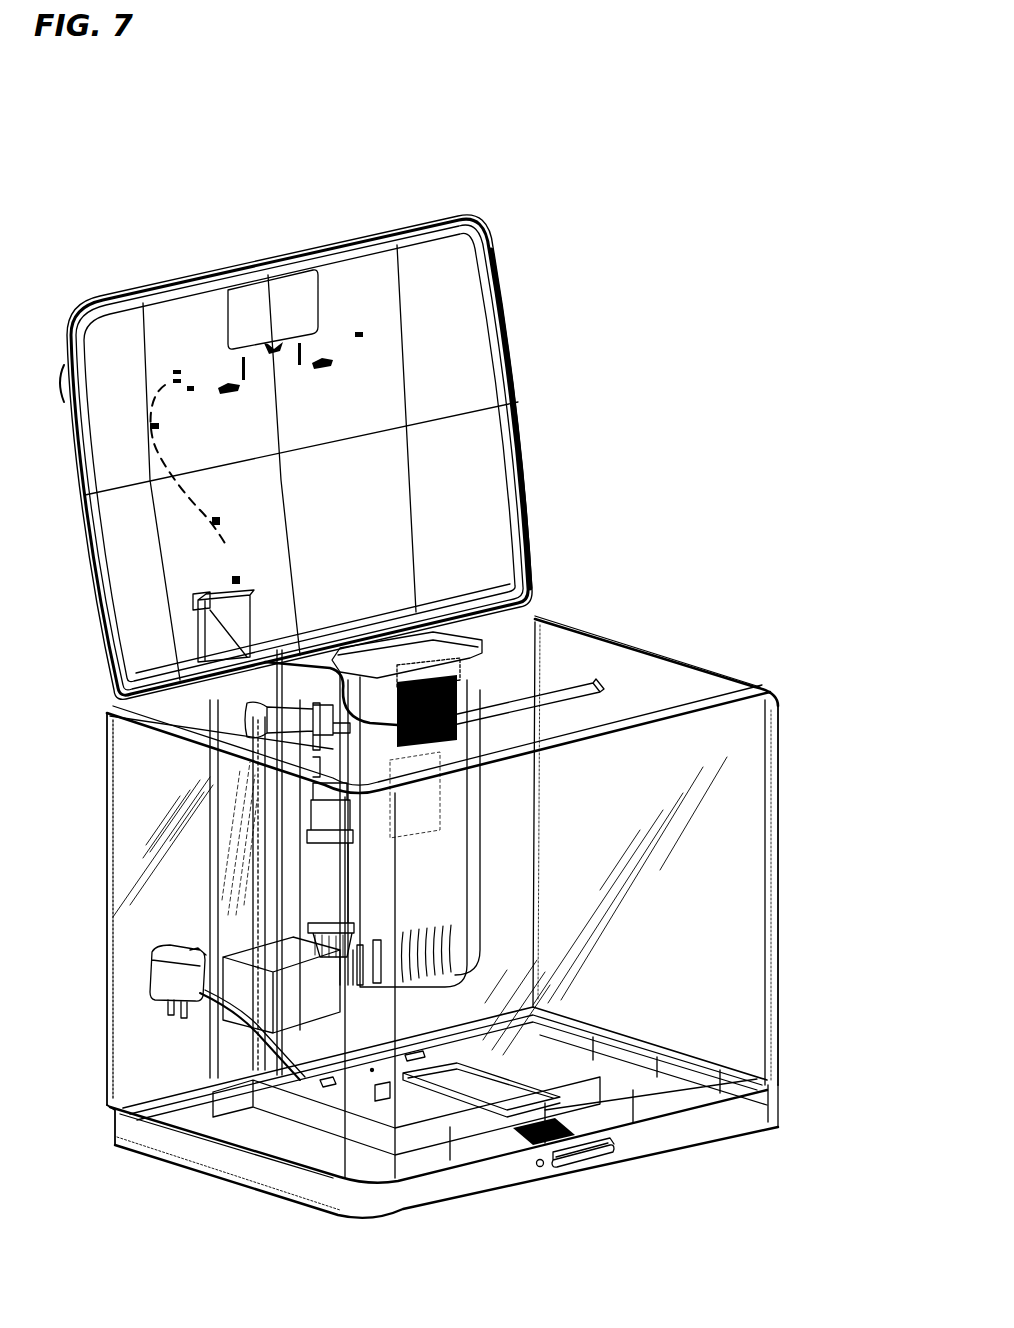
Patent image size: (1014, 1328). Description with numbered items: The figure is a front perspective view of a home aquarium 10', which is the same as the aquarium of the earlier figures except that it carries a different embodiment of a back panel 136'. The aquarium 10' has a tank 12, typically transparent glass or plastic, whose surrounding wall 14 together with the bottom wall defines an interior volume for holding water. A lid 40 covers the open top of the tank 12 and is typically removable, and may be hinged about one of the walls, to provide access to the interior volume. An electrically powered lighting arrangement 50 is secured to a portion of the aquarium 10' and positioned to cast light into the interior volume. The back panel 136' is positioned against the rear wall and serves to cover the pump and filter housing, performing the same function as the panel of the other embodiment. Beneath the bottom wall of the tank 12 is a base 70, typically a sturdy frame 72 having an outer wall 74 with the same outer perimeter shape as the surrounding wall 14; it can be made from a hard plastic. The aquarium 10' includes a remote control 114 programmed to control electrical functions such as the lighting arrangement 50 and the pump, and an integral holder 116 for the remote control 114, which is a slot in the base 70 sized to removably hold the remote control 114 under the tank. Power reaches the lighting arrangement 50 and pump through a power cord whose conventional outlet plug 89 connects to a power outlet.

The aquarium 10' is at (429, 704).
The lid 40 is at (492, 467).
The tank 12 is at (66, 762).
The surrounding wall 14 is at (108, 869).
The lighting arrangement 50 is at (580, 682).
The back panel 136' is at (594, 809).
The outlet plug 89 is at (165, 984).
The base 70 is at (753, 1113).
The frame 72 is at (233, 1170).
The outer wall 74 is at (172, 1159).
The remote control 114 is at (587, 1158).
The holder 116 is at (624, 1171).